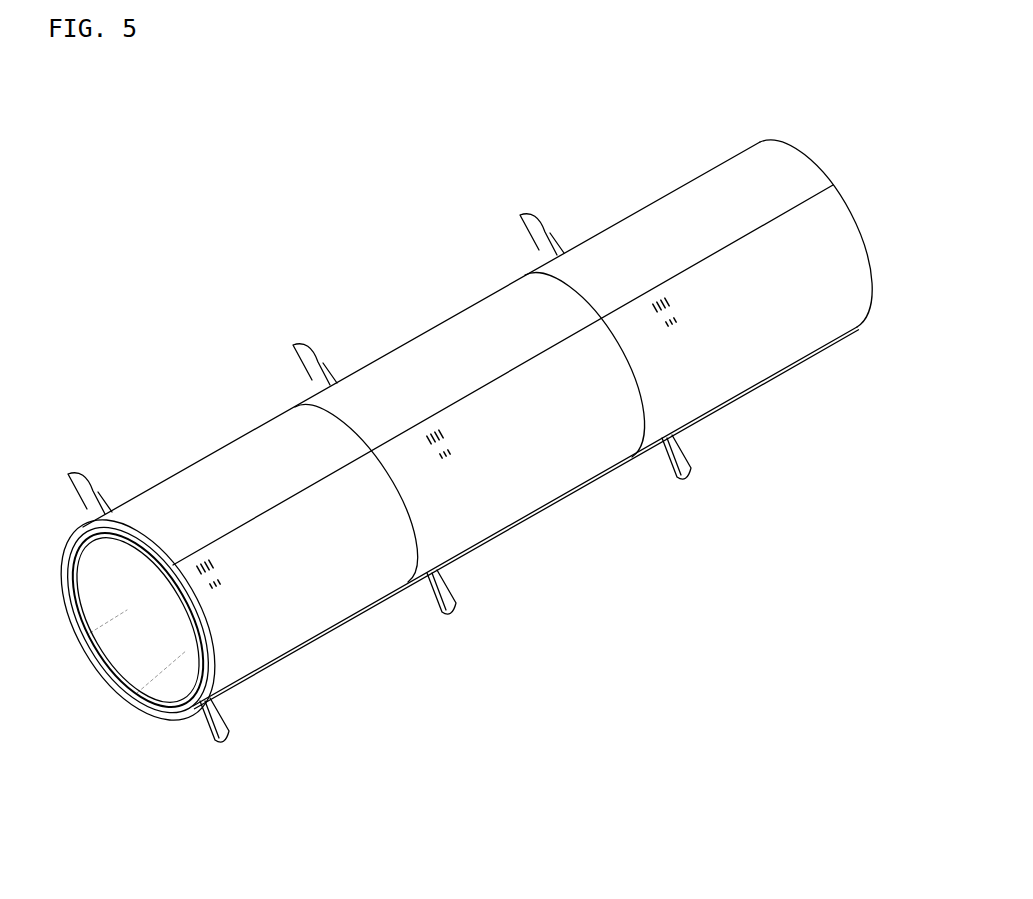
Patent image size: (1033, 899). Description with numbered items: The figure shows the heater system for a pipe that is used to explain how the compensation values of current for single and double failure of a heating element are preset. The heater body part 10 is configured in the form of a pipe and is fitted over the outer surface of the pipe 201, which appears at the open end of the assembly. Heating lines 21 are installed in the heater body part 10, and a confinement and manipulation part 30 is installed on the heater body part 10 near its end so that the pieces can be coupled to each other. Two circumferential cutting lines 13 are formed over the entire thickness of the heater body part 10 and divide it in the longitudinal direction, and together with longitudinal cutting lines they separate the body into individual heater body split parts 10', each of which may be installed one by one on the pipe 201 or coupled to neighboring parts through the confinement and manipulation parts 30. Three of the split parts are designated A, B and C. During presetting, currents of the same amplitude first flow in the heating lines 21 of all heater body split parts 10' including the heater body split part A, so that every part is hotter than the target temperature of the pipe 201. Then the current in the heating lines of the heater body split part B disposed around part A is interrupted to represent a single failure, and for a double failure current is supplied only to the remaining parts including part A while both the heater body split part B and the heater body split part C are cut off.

The heater body part 10 is at (481, 416).
The heater body split part 10' is at (471, 425).
The circumferential cutting line 13 is at (343, 418).
The heating line 21 is at (66, 479).
The confinement and manipulation part 30 is at (62, 563).
The pipe 201 is at (93, 648).
The heater body split part A is at (480, 328).
The heater body split part B is at (280, 452).
The heater body split part C is at (577, 450).